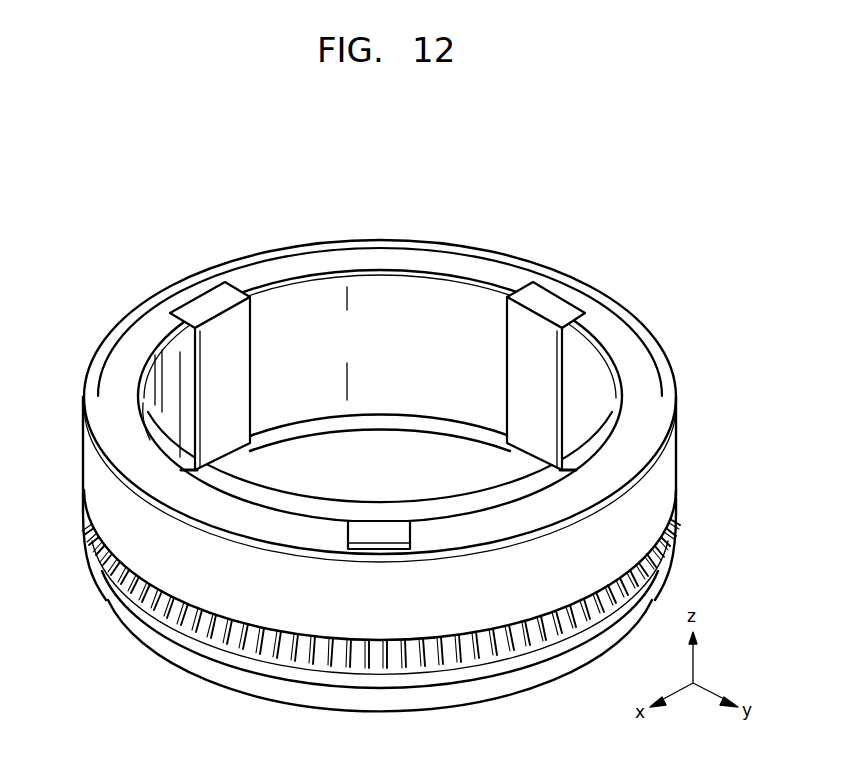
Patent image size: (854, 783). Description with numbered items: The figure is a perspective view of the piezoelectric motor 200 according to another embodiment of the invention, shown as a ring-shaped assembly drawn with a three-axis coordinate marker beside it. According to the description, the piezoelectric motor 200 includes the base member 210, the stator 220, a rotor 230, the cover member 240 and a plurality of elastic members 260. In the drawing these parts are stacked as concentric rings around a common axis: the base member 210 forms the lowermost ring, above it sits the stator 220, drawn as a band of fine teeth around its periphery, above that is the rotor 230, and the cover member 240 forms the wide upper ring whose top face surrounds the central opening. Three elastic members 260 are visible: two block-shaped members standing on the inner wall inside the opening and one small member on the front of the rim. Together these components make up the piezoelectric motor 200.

The piezoelectric motor 200 is at (116, 258).
The base member 210 is at (425, 697).
The stator 220 is at (483, 655).
The rotor 230 is at (532, 598).
The cover member 240 is at (633, 372).
The elastic members 260 is at (208, 310).